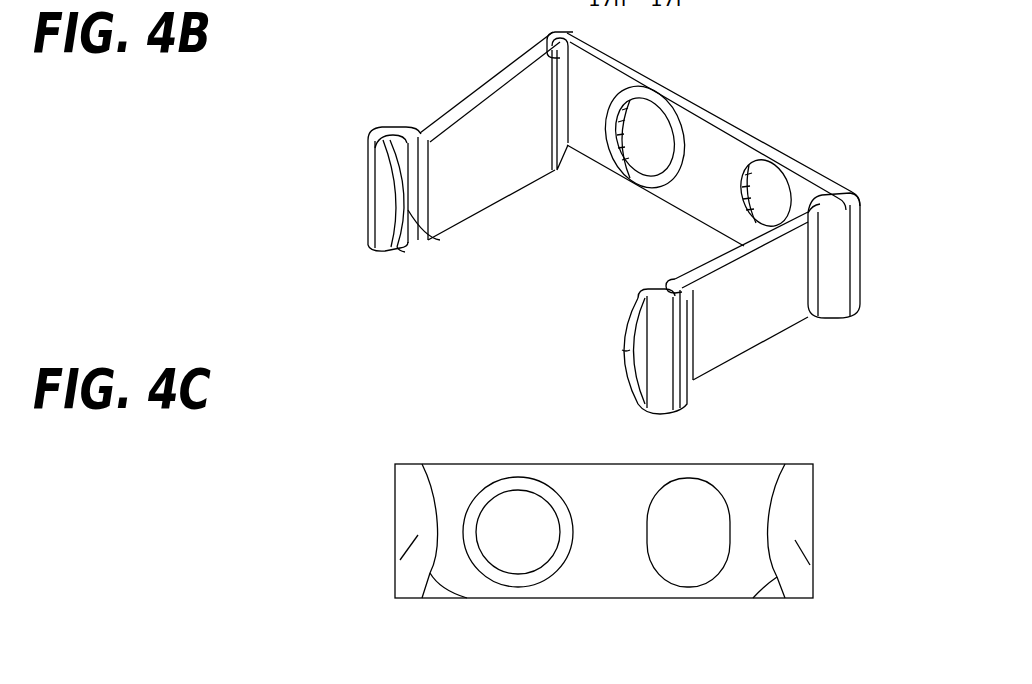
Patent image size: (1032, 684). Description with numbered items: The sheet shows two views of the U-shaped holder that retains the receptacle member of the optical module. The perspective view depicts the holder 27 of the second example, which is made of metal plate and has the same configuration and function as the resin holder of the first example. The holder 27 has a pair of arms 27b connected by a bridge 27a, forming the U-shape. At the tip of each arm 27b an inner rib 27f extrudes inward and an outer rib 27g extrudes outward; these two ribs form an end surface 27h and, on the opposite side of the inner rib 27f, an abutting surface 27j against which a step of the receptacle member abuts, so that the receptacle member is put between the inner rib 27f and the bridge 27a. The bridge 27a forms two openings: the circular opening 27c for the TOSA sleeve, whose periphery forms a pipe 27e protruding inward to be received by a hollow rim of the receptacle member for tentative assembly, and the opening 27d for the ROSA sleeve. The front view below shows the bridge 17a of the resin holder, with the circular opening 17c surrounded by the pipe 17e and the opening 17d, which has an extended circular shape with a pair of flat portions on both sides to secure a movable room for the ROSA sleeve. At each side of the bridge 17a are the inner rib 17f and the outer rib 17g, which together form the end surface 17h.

In FIG. 4B, the holder 27 is at (773, 80).
In FIG. 4B, the bridge 27a is at (793, 157).
In FIG. 4B, the arm 27b is at (477, 97).
In FIG. 4B, the opening 27c is at (640, 143).
In FIG. 4B, the opening 27d is at (740, 200).
In FIG. 4B, the pipe 27e is at (653, 100).
In FIG. 4B, the inner rib 27f is at (398, 250).
In FIG. 4B, the outer rib 27g is at (368, 190).
In FIG. 4B, the end surface 27h is at (383, 218).
In FIG. 4B, the abutting surface 27j is at (433, 237).
In FIG. 4C, the bridge 17a is at (607, 583).
In FIG. 4C, the opening 17c is at (523, 540).
In FIG. 4C, the opening 17d is at (683, 550).
In FIG. 4C, the pipe 17e is at (540, 478).
In FIG. 4C, the inner rib 17f is at (470, 598).
In FIG. 4C, the outer rib 17g is at (395, 537).
In FIG. 4C, the end surface 17h is at (413, 555).